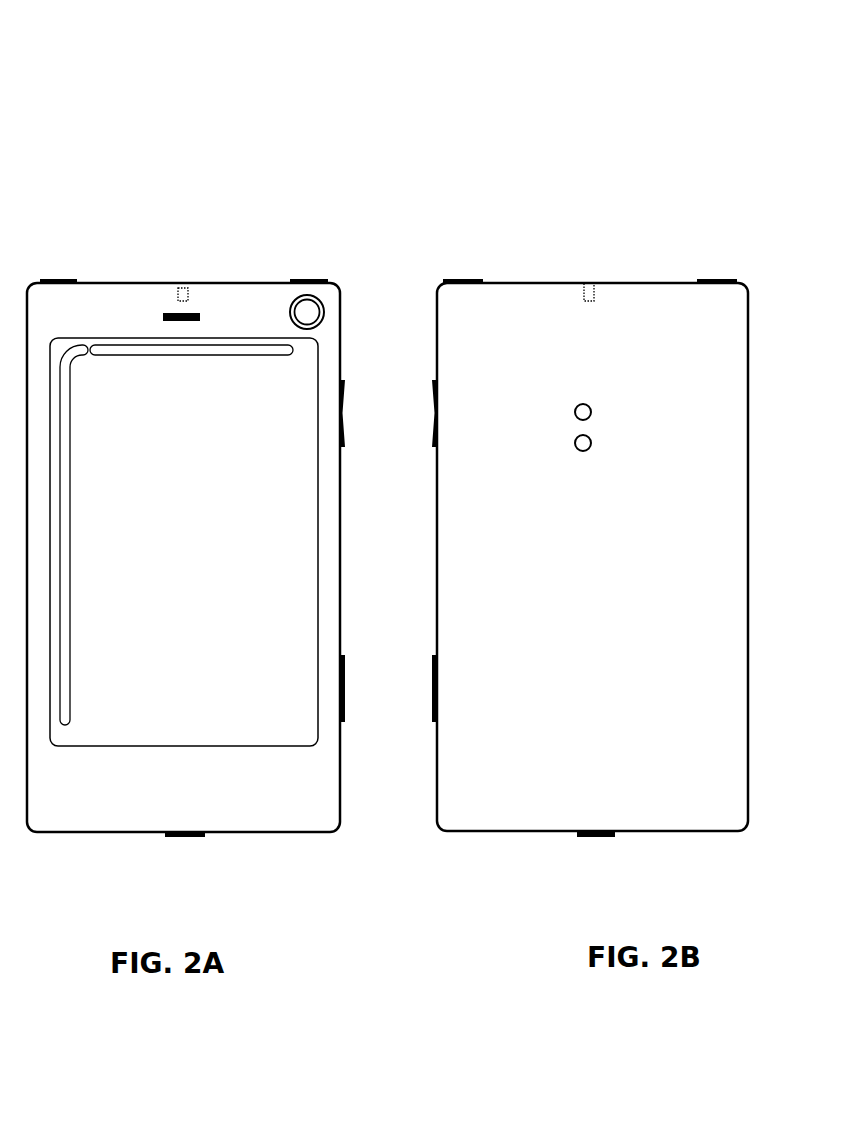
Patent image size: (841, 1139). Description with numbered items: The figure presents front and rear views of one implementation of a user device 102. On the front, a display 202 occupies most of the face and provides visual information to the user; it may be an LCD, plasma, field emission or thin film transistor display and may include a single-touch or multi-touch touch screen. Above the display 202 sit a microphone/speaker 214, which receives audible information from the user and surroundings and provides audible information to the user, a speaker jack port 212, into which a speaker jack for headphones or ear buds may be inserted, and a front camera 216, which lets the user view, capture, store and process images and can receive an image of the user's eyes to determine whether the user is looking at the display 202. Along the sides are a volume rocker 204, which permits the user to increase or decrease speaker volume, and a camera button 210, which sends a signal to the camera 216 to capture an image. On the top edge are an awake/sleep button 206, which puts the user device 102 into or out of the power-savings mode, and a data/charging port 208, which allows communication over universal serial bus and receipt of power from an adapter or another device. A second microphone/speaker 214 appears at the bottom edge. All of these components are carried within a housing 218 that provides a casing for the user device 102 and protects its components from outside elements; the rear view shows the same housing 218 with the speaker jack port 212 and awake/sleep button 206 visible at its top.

In FIG. 2A, the user device 102 is at (176, 92).
In FIG. 2B, the user device 102 is at (583, 87).
In FIG. 2A, the display 202 is at (318, 583).
In FIG. 2A, the volume rocker 204 is at (345, 386).
In FIG. 2B, the volume rocker 204 is at (432, 386).
In FIG. 2A, the awake/sleep button 206 is at (57, 279).
In FIG. 2B, the awake/sleep button 206 is at (714, 279).
In FIG. 2A, the data/charging port 208 is at (310, 279).
In FIG. 2B, the data/charging port 208 is at (455, 279).
In FIG. 2A, the camera button 210 is at (343, 670).
In FIG. 2B, the camera button 210 is at (433, 680).
In FIG. 2A, the speaker jack port 212 is at (182, 288).
In FIG. 2B, the speaker jack port 212 is at (588, 283).
In FIG. 2A, the microphone/speaker 214 is at (163, 316).
In FIG. 2B, the microphone/speaker 214 is at (615, 832).
In FIG. 2A, the camera 216 is at (307, 312).
In FIG. 2A, the housing 218 is at (306, 832).
In FIG. 2B, the housing 218 is at (452, 832).